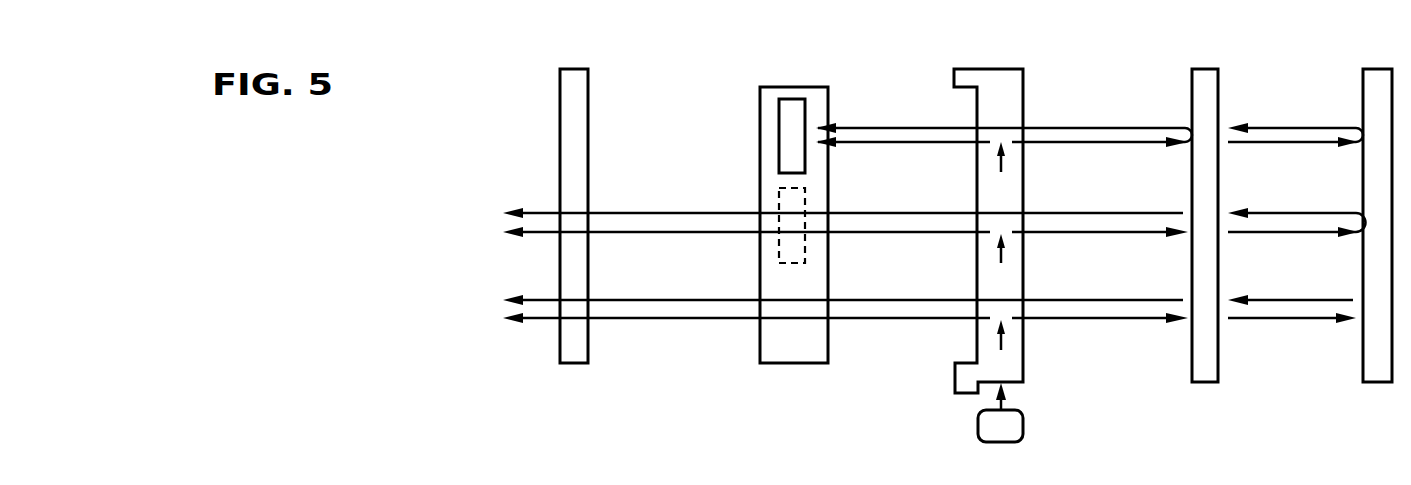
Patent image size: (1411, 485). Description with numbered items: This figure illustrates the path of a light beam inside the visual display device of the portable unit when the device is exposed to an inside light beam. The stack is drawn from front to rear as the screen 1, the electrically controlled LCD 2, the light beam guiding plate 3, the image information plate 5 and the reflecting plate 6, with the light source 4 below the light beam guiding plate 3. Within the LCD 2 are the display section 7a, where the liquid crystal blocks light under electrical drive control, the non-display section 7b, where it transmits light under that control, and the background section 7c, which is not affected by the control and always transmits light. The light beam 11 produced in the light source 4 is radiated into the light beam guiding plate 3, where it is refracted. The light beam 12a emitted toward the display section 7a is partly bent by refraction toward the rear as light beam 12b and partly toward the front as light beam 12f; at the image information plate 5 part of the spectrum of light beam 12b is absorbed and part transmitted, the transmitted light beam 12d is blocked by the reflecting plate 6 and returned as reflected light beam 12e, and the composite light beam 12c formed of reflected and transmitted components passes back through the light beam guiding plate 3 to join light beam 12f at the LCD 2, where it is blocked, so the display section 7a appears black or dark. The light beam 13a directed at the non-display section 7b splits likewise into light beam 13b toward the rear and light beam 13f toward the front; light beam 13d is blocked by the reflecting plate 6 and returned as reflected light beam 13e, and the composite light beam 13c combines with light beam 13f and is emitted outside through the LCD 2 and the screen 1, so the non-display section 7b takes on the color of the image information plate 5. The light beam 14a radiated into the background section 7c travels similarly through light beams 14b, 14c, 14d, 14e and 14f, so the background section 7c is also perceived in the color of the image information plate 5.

The screen 1 is at (577, 364).
The LCD 2 is at (790, 364).
The light beam guiding plate 3 is at (955, 382).
The light source 4 is at (978, 427).
The image information plate 5 is at (1207, 383).
The reflecting plate 6 is at (1380, 383).
The display section 7a is at (779, 113).
The non-display section 7b is at (779, 196).
The background section 7c is at (783, 288).
The light beam 11 is at (1005, 402).
The light beam 12a is at (997, 161).
The light beam 12b is at (1093, 145).
The composite light beam 12c is at (1097, 128).
The light beam 12d is at (1290, 145).
The reflected light beam 12e is at (1290, 128).
The light beam 12f is at (886, 145).
The light beam 13a is at (997, 253).
The light beam 13b is at (1097, 234).
The composite light beam 13c is at (1117, 213).
The light beam 13d is at (1290, 233).
The reflected light beam 13e is at (1298, 213).
The light beam 13f is at (887, 234).
The light beam 14a is at (997, 339).
The light beam 14b is at (1100, 320).
The composite light beam 14c is at (1117, 300).
The light beam 14d is at (1290, 320).
The reflected light beam 14e is at (1298, 300).
The light beam 14f is at (862, 320).